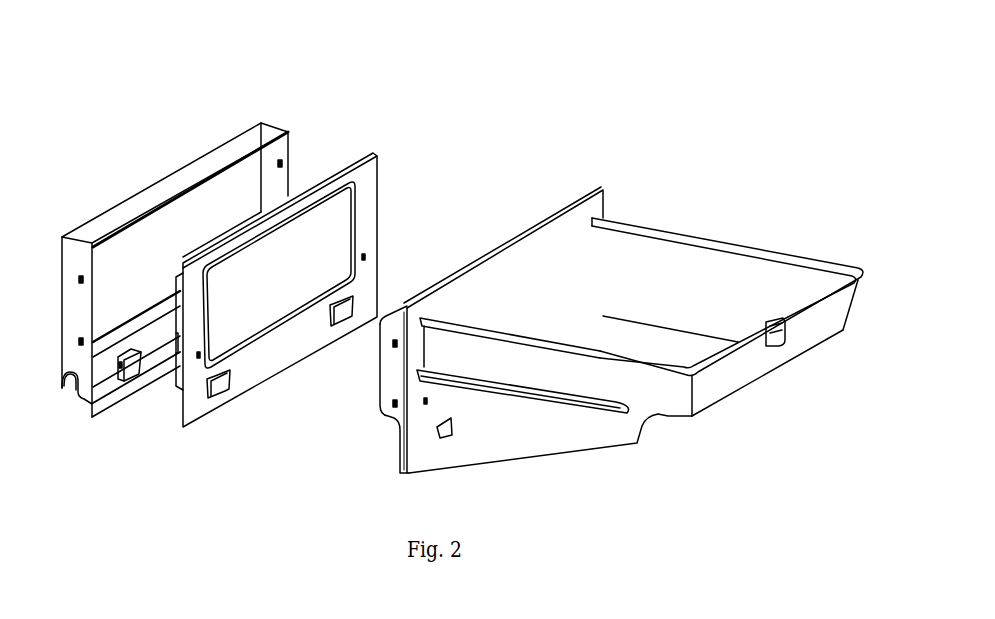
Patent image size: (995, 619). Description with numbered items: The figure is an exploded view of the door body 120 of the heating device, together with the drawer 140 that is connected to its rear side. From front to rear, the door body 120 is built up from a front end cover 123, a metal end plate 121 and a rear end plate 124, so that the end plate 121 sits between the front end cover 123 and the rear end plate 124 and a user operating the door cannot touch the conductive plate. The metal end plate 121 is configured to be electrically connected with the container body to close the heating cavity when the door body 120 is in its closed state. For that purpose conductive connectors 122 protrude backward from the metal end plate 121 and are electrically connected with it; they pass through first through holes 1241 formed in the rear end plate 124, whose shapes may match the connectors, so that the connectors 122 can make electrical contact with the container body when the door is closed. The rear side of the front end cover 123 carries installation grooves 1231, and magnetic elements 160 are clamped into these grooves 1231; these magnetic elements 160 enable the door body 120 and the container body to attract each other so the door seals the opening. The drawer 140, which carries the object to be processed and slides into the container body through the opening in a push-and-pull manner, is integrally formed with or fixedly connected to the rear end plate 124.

The door body 120 is at (548, 160).
The metal end plate 121 is at (364, 165).
The conductive connectors 122 is at (219, 400).
The front end cover 123 is at (216, 157).
The installation grooves 1231 is at (91, 392).
The rear end plate 124 is at (518, 247).
The first through holes 1241 is at (444, 437).
The drawer 140 is at (677, 257).
The magnetic elements 160 is at (130, 381).